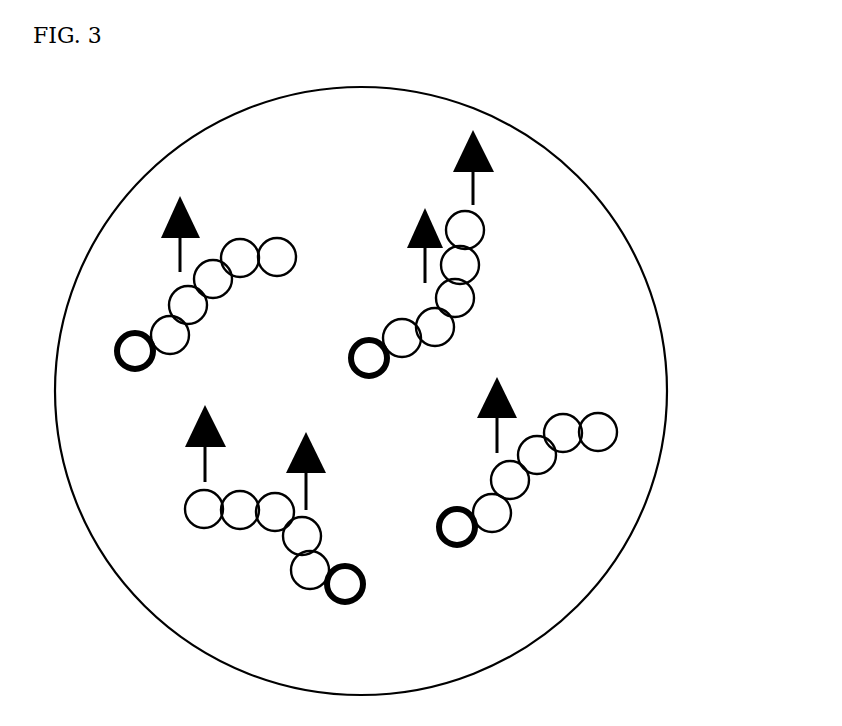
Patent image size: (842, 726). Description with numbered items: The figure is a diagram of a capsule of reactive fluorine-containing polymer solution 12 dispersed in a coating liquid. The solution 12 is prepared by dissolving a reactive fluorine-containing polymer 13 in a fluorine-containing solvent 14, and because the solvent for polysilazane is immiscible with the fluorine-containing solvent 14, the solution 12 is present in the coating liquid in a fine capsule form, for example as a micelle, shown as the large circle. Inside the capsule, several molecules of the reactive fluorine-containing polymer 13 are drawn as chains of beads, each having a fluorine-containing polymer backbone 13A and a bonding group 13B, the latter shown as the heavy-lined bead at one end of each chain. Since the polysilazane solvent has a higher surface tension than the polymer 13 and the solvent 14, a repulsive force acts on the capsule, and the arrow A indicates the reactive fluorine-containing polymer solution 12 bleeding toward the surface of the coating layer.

The reactive fluorine-containing polymer solution 12 is at (664, 448).
The reactive fluorine-containing polymer 13 is at (544, 299).
The fluorine-containing polymer backbone 13A is at (470, 235).
The bonding group 13B is at (369, 358).
The fluorine-containing solvent 14 is at (598, 537).
The arrow A is at (475, 185).